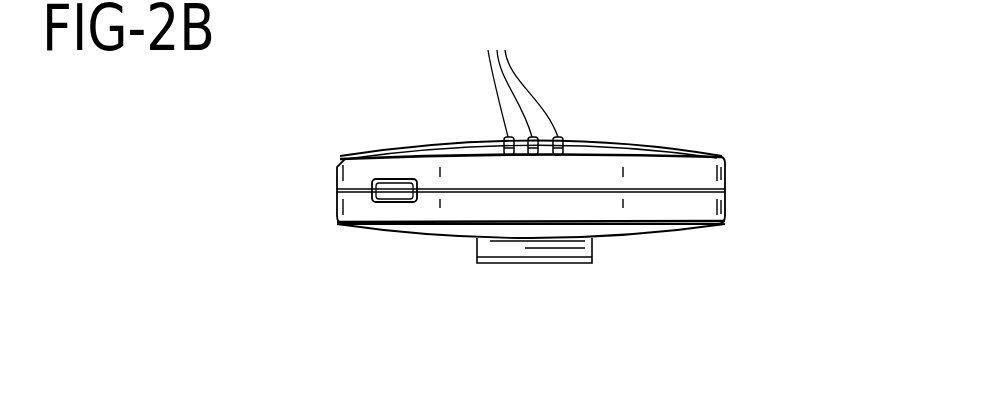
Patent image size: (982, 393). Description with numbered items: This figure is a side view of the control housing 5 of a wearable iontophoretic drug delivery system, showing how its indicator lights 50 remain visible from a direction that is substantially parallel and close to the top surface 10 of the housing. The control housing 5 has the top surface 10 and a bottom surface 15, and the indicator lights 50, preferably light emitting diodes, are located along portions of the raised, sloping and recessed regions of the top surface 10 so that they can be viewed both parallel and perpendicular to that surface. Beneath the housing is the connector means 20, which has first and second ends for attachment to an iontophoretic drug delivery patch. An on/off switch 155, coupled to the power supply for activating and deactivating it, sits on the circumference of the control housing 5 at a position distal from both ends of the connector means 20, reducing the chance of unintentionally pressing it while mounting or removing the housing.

The control housing 5 is at (725, 201).
The top surface 10 is at (640, 150).
The bottom surface 15 is at (418, 235).
The connector means 20 is at (587, 282).
The indicator lights 50 is at (524, 91).
The on/off switch 155 is at (392, 191).